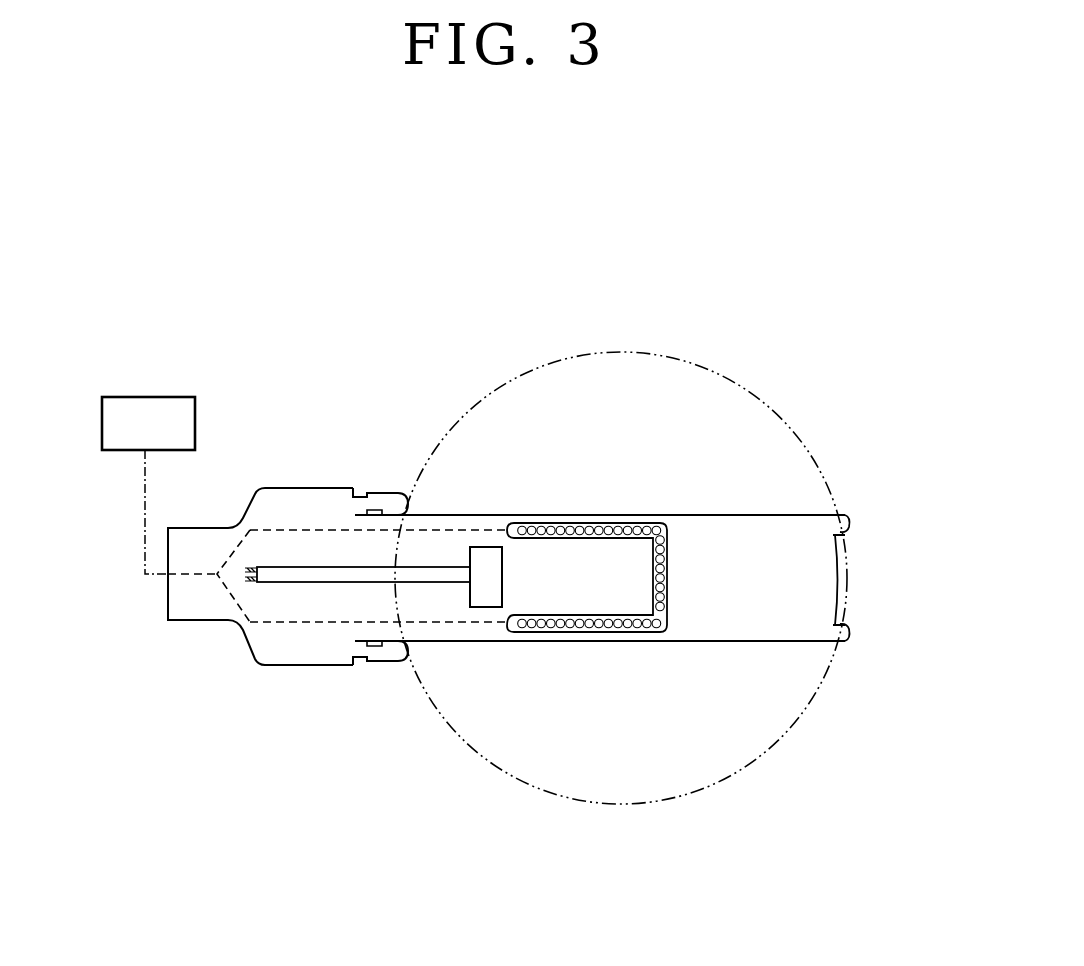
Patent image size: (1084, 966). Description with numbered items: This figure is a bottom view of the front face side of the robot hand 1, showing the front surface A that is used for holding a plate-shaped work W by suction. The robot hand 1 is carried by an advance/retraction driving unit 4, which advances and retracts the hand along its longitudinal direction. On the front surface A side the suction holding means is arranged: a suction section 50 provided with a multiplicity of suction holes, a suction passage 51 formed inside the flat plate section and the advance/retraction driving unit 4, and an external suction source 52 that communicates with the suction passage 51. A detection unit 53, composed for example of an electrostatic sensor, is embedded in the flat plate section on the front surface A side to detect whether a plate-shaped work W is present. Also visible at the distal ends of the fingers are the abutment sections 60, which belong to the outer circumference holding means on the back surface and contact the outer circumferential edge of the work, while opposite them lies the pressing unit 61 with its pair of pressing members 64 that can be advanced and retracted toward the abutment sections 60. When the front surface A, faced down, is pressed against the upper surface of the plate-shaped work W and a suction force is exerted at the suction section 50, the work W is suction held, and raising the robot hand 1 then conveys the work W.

The robot hand 1 is at (328, 378).
The advance/retraction driving unit 4 is at (287, 480).
The suction section 50 is at (608, 523).
The suction passage 51 is at (185, 576).
The external suction source 52 is at (143, 397).
The detection unit 53 is at (486, 547).
The abutment sections 60 is at (847, 518).
The pressing unit 61 is at (373, 480).
The pressing members 64 is at (406, 494).
The front surface A is at (540, 554).
The plate-shaped work W is at (734, 376).